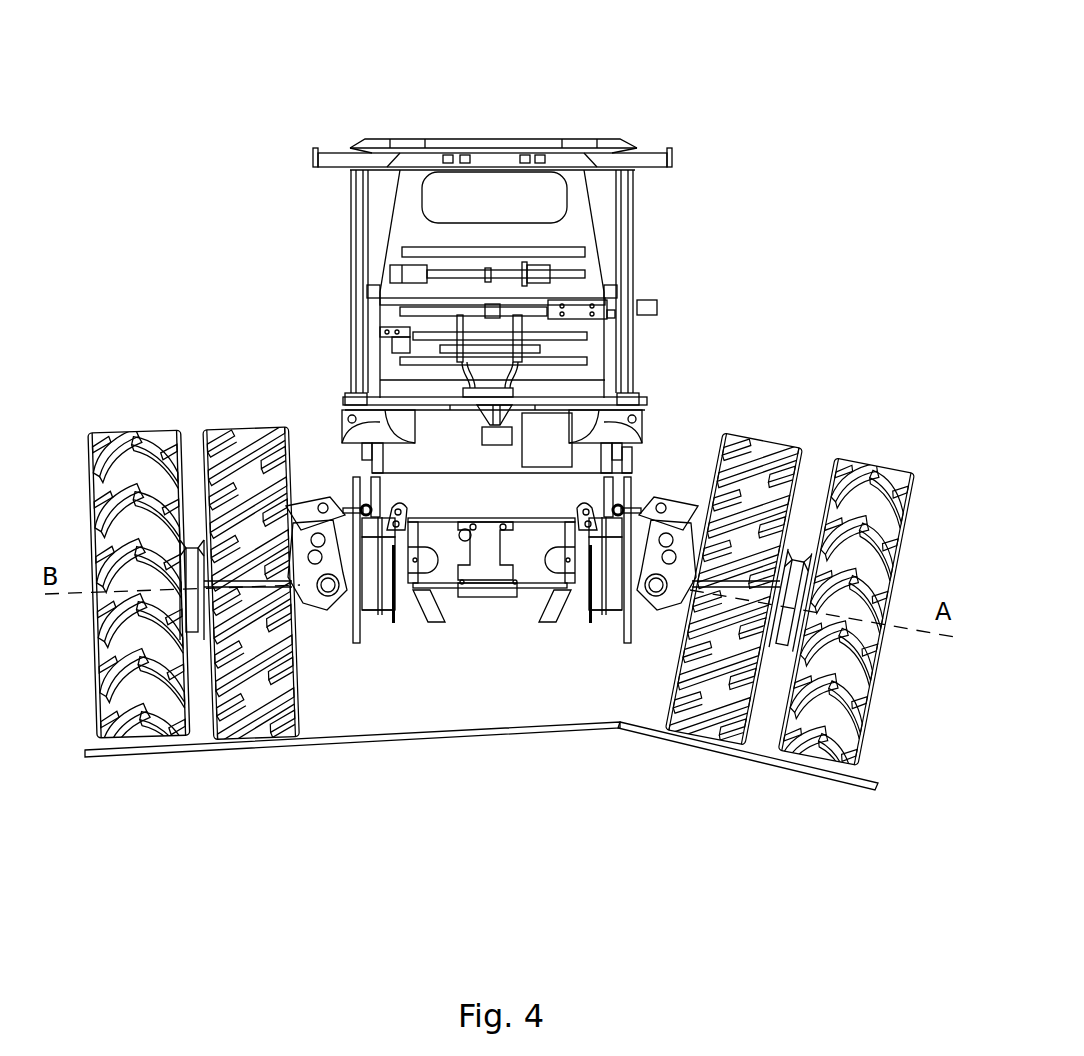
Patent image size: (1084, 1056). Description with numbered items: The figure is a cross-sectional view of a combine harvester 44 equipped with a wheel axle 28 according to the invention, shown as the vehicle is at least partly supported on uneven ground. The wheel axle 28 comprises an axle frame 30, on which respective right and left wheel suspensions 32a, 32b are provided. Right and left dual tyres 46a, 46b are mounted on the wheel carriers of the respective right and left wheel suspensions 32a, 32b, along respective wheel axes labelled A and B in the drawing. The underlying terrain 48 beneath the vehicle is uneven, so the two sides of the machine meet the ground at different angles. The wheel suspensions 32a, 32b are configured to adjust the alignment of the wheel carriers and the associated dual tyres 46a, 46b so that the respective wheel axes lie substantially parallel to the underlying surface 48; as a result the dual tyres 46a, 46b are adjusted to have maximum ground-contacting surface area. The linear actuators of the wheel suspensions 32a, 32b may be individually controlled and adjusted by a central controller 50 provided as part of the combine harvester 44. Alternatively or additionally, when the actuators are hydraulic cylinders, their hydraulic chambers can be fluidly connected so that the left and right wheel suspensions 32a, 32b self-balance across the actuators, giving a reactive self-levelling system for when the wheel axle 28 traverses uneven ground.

The combine harvester 44 is at (603, 143).
The central controller 50 is at (553, 427).
The axle frame 30 is at (533, 560).
The right wheel suspension 32a is at (789, 549).
The left wheel suspension 32b is at (194, 577).
The right dual tyres 46a is at (810, 707).
The left dual tyres 46b is at (236, 700).
The wheel axle 28 is at (365, 760).
The underlying terrain 48 is at (622, 728).